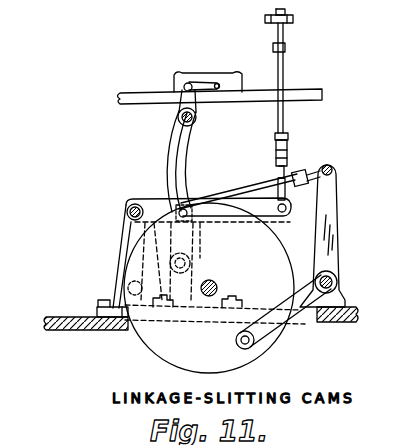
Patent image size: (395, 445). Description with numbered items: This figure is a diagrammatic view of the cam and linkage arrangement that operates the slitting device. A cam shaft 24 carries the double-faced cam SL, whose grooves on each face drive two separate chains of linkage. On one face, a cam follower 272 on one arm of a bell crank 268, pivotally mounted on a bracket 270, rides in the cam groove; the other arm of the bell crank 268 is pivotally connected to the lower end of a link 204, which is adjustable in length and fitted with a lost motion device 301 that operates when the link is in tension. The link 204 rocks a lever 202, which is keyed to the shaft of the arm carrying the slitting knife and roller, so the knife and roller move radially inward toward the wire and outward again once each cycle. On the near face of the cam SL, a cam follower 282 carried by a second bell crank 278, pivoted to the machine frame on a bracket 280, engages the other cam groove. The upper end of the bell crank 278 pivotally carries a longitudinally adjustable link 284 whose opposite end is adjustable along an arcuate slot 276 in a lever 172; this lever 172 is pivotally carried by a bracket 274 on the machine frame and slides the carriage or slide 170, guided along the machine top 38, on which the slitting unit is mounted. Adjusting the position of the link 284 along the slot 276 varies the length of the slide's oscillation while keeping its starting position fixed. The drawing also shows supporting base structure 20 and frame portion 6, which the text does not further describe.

The machine top 38 is at (129, 92).
The slide 170 is at (224, 72).
The lever 172 is at (174, 128).
The arcuate slot 276 is at (188, 140).
The lever 202 is at (290, 23).
The link 204 is at (285, 70).
The lost motion device 301 is at (296, 148).
The link 284 is at (250, 192).
The second bell crank 278 is at (337, 203).
The bracket 280 is at (343, 301).
The cam follower 282 is at (262, 342).
The bell crank 268 is at (158, 203).
The bracket 270 is at (118, 267).
The cam SL is at (150, 340).
The bracket 274 is at (196, 262).
The cam shaft 24 is at (213, 279).
The cam follower 272 is at (128, 288).
The left base support 20 is at (53, 316).
The frame 6 is at (390, 245).